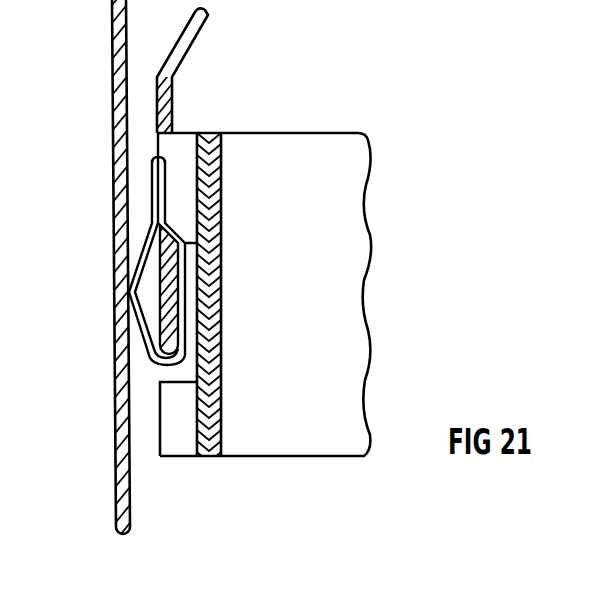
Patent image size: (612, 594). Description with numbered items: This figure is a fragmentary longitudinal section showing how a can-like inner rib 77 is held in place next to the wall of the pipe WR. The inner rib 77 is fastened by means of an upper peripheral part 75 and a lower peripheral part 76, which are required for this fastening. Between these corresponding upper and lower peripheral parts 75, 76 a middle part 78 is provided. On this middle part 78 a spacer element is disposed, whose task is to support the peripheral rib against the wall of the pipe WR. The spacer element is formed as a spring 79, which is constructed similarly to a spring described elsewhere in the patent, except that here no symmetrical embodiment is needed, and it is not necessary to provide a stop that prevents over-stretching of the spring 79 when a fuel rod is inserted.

The wall of the pipe WR is at (118, 150).
The upper peripheral part 75 is at (212, 176).
The lower peripheral part 76 is at (218, 415).
The can-like inner rib 77 is at (214, 328).
The middle part 78 is at (168, 267).
The spring 79 is at (127, 293).